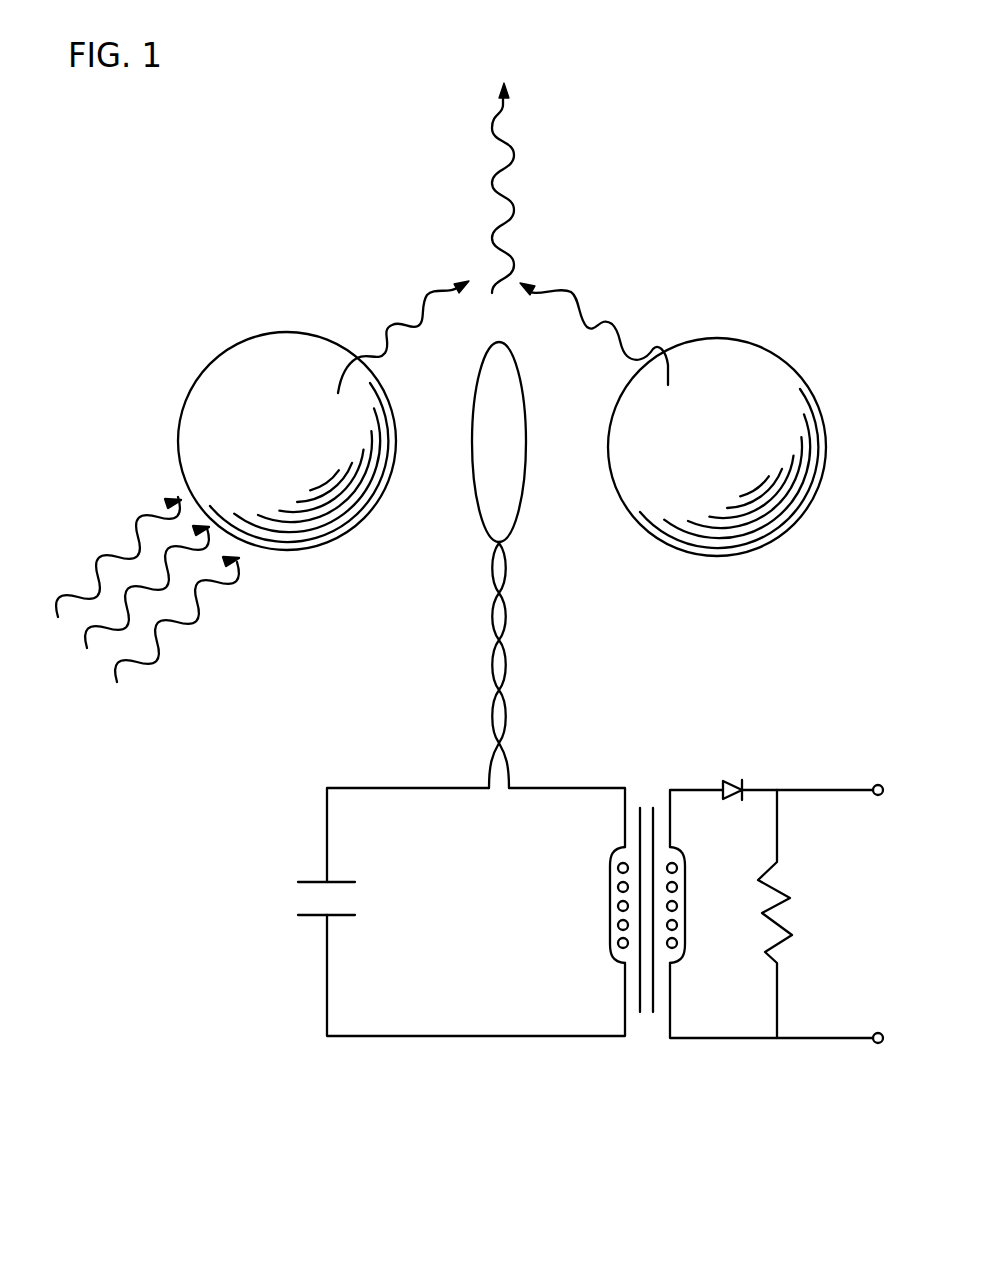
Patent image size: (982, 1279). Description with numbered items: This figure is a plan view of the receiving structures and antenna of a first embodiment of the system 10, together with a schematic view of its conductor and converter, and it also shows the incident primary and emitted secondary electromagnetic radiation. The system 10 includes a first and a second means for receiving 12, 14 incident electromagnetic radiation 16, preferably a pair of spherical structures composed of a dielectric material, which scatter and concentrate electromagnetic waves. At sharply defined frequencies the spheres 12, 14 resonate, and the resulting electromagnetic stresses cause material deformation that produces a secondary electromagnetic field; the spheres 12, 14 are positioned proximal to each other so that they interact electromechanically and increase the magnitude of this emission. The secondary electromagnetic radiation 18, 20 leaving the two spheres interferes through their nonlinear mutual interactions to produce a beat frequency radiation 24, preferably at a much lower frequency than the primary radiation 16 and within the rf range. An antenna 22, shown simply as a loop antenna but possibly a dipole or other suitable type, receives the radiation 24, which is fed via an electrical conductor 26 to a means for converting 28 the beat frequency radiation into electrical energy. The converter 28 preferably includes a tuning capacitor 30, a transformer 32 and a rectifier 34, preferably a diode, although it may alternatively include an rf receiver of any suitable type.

The system 10 is at (334, 178).
The first means for receiving 12 is at (207, 367).
The second means for receiving 14 is at (794, 379).
The incident electromagnetic radiation 16 is at (162, 627).
The secondary electromagnetic radiation 18 is at (400, 324).
The secondary electromagnetic radiation 20 is at (575, 292).
The antenna 22 is at (518, 513).
The beat frequency radiation 24 is at (514, 152).
The electrical conductor 26 is at (503, 686).
The means for converting 28 is at (420, 957).
The tuning capacitor 30 is at (305, 935).
The transformer 32 is at (643, 1052).
The rectifier 34 is at (751, 766).